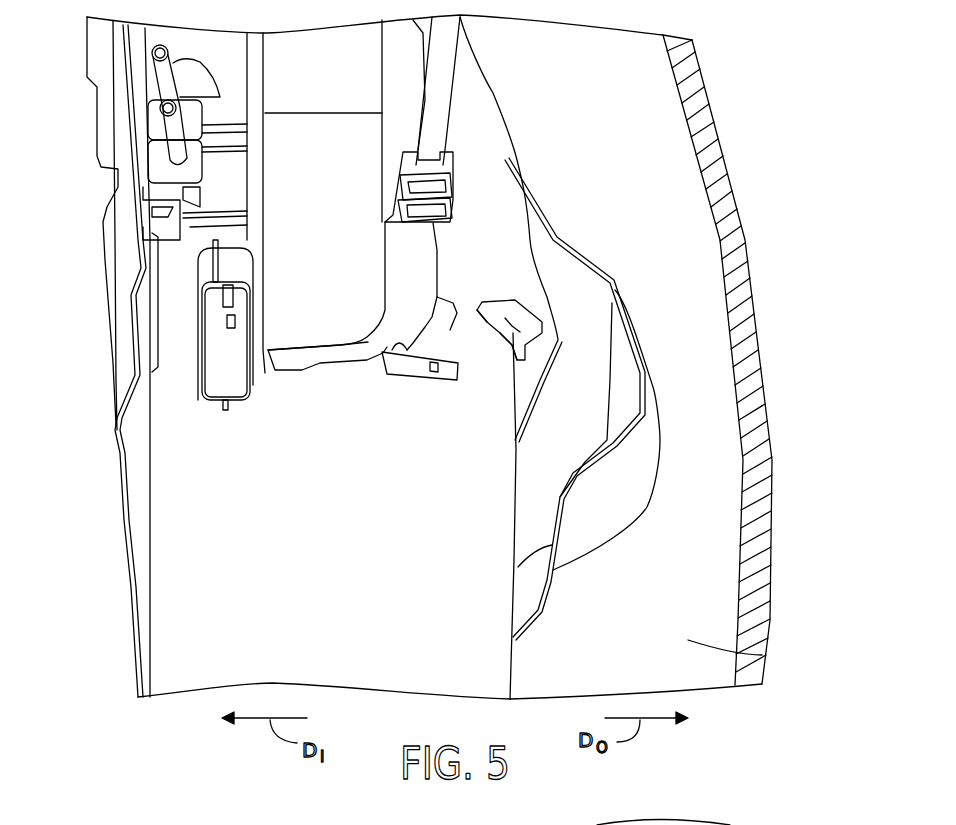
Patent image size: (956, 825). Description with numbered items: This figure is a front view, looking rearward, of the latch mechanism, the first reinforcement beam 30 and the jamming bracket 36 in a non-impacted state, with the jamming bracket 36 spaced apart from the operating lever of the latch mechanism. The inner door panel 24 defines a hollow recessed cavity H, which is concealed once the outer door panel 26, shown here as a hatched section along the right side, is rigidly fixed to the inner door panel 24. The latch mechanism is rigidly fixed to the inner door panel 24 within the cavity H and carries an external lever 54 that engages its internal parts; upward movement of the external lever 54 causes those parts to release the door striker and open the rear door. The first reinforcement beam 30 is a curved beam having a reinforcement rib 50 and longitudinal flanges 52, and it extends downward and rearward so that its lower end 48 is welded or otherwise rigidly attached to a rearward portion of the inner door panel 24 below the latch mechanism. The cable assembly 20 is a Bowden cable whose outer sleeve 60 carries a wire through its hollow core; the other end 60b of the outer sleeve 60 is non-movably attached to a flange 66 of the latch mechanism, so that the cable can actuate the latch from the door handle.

The cable assembly 20 is at (452, 105).
The inner door panel 24 is at (123, 535).
The outer door panel 26 is at (723, 143).
The first reinforcement beam 30 is at (656, 408).
The jamming bracket 36 is at (491, 329).
The lower end 48 is at (510, 608).
The reinforcement rib 50 is at (645, 393).
The longitudinal flanges 52 is at (547, 300).
The external lever 54 is at (443, 381).
The outer sleeve 60 is at (447, 57).
The other end of the outer sleeve 60b is at (440, 197).
The flange 66 is at (448, 253).
The cavity H is at (762, 655).